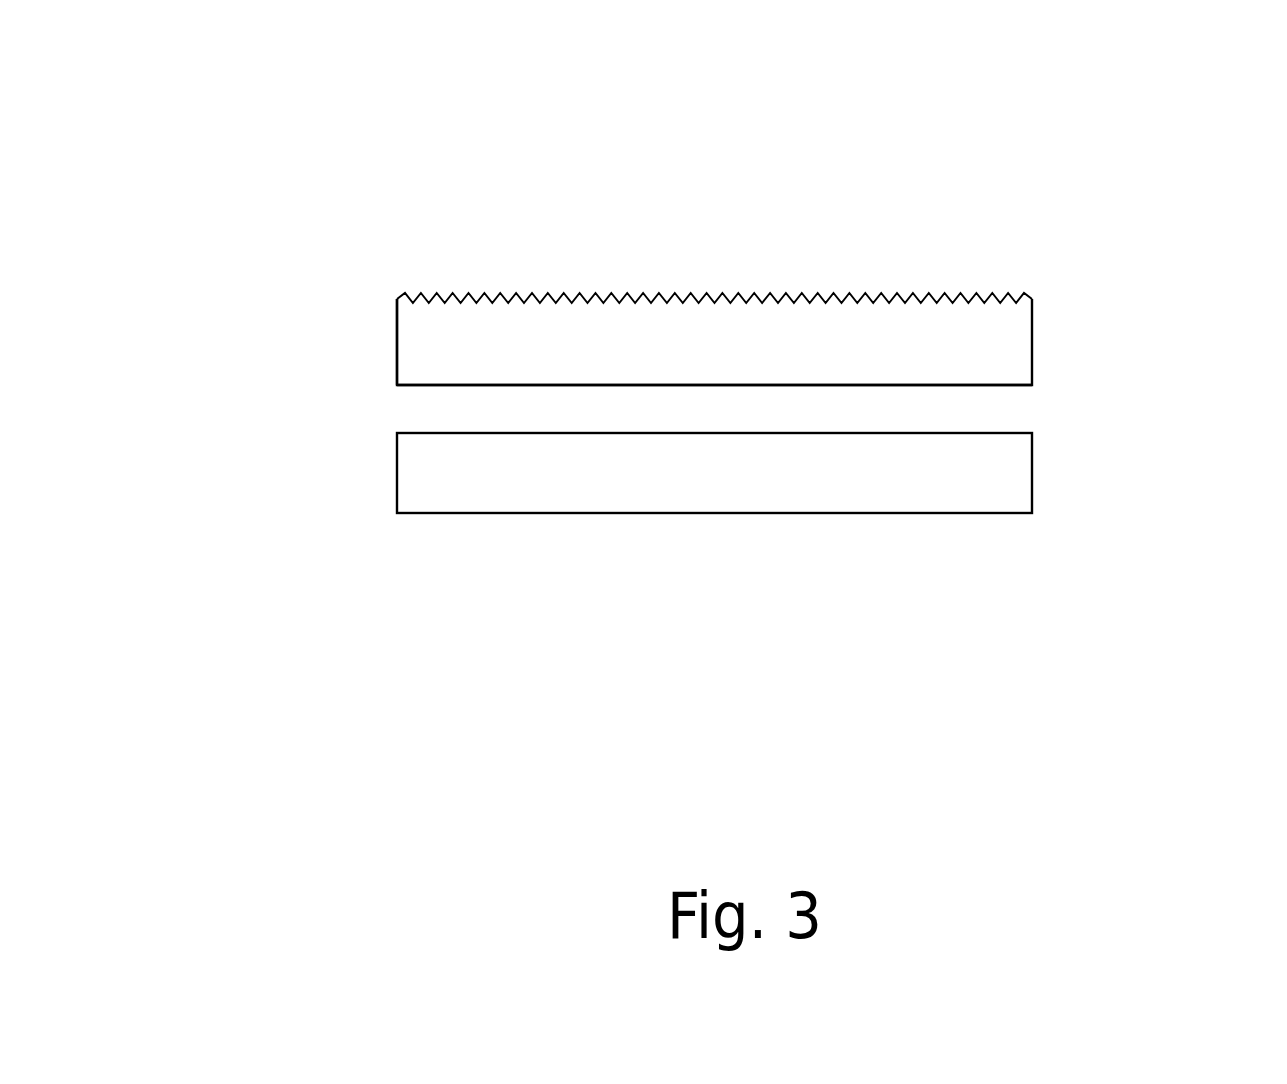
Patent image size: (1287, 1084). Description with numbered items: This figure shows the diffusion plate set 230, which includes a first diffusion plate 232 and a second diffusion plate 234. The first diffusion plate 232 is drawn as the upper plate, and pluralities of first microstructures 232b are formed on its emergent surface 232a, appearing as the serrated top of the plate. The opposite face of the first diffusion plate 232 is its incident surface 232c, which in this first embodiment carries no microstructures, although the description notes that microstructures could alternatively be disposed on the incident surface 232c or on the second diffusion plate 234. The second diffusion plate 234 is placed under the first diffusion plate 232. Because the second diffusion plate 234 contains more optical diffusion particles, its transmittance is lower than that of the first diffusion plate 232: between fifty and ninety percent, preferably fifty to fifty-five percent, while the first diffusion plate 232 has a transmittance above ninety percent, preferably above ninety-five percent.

The diffusion plate set 230 is at (1183, 732).
The first diffusion plate 232 is at (694, 246).
The emergent surface 232a is at (487, 263).
The first microstructures 232b is at (397, 294).
The incident surface 232c is at (440, 384).
The second diffusion plate 234 is at (1032, 475).